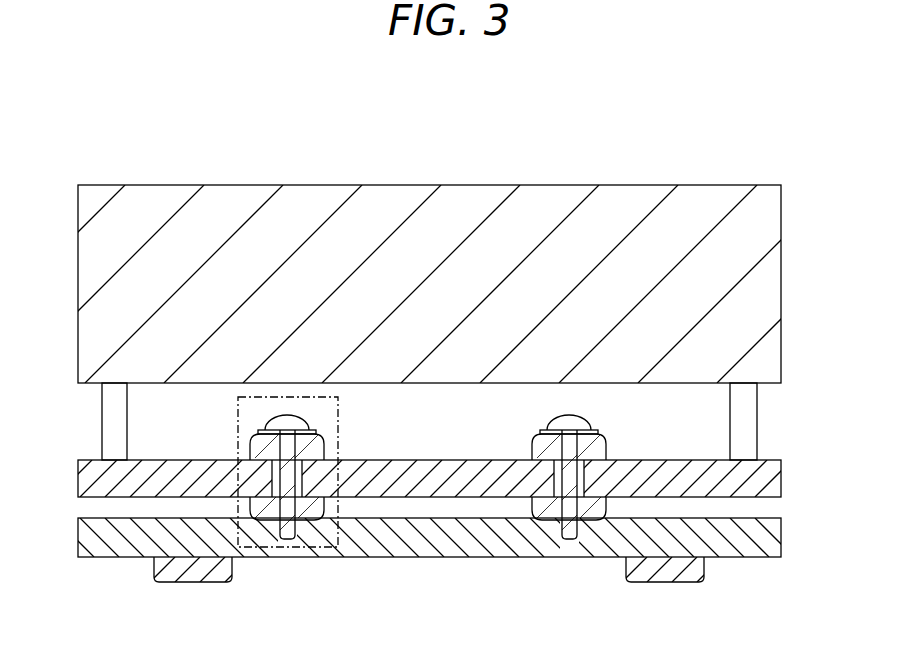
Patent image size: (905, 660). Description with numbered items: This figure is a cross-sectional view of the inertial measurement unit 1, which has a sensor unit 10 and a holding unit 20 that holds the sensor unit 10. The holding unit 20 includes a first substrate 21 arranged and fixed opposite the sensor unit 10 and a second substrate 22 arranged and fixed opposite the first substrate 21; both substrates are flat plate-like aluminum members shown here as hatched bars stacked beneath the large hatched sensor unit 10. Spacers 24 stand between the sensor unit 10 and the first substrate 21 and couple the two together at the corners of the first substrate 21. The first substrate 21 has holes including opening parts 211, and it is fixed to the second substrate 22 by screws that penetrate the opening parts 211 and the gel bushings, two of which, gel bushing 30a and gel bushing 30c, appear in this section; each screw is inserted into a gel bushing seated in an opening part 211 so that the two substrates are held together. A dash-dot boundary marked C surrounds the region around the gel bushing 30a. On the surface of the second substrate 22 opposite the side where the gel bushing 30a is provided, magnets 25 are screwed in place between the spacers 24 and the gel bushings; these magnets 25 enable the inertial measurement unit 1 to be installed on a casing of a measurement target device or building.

The inertial measurement unit 1 is at (740, 135).
The sensor unit 10 is at (770, 274).
The holding unit 20 is at (845, 388).
The first substrate 21 is at (79, 479).
The opening part 211 is at (601, 446).
The second substrate 22 is at (79, 538).
The spacer 24 is at (102, 426).
The magnet 25 is at (200, 576).
The gel bushing 30a is at (265, 530).
The gel bushing 30c is at (546, 530).
The region C is at (331, 550).